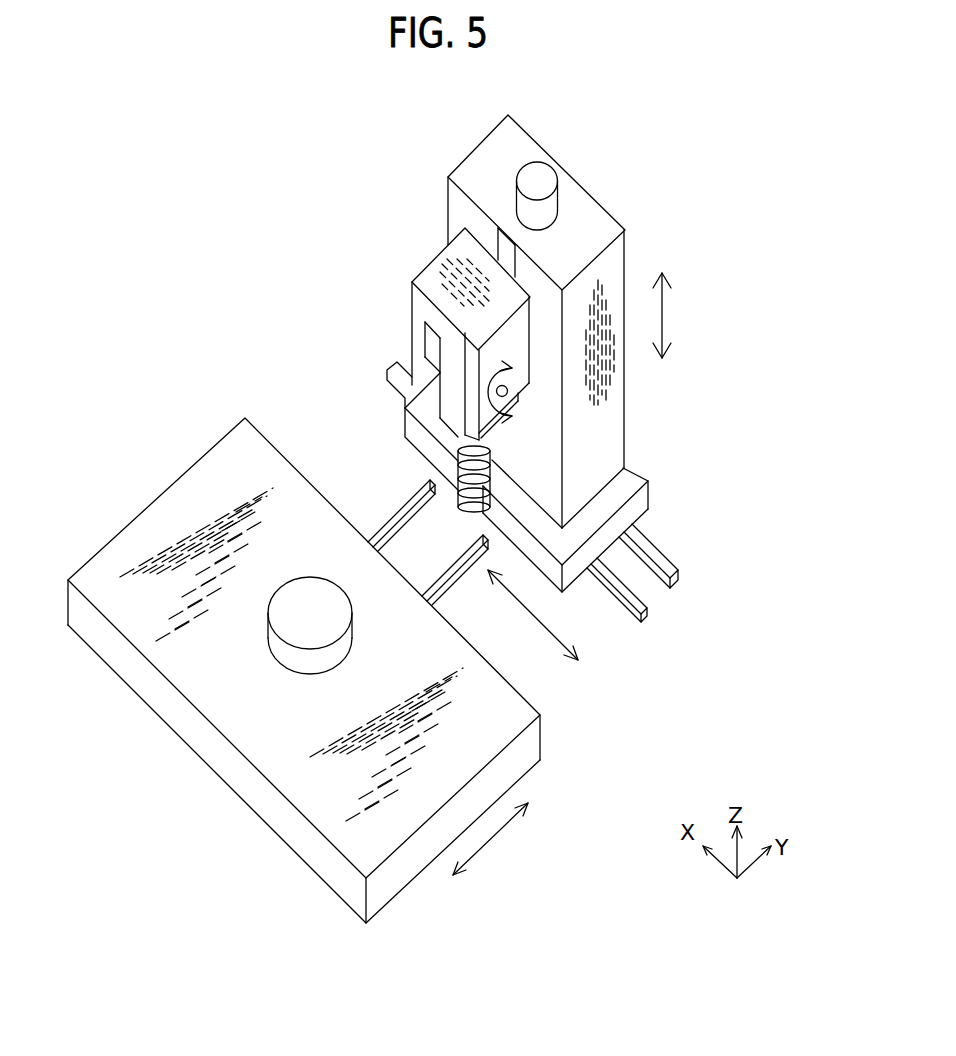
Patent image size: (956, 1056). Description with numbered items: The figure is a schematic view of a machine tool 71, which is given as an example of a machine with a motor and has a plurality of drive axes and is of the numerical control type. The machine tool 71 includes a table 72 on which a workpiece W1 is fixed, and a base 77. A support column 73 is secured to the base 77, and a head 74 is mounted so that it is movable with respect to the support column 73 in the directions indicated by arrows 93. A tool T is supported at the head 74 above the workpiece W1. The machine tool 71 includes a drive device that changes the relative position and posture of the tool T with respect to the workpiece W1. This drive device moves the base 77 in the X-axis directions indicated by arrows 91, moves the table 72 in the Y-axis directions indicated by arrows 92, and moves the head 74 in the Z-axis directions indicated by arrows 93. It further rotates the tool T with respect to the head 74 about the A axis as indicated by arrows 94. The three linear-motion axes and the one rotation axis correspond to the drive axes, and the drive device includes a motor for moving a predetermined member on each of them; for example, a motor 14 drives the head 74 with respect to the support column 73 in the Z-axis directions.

The motor 14 is at (552, 203).
The machine tool 71 is at (670, 193).
The table 72 is at (323, 859).
The support column 73 is at (607, 428).
The head 74 is at (412, 324).
The base 77 is at (647, 493).
The arrows 91 is at (550, 636).
The arrows 92 is at (497, 836).
The arrows 93 is at (662, 312).
The arrows 94 is at (484, 384).
The tool T is at (458, 478).
The workpiece W1 is at (272, 628).